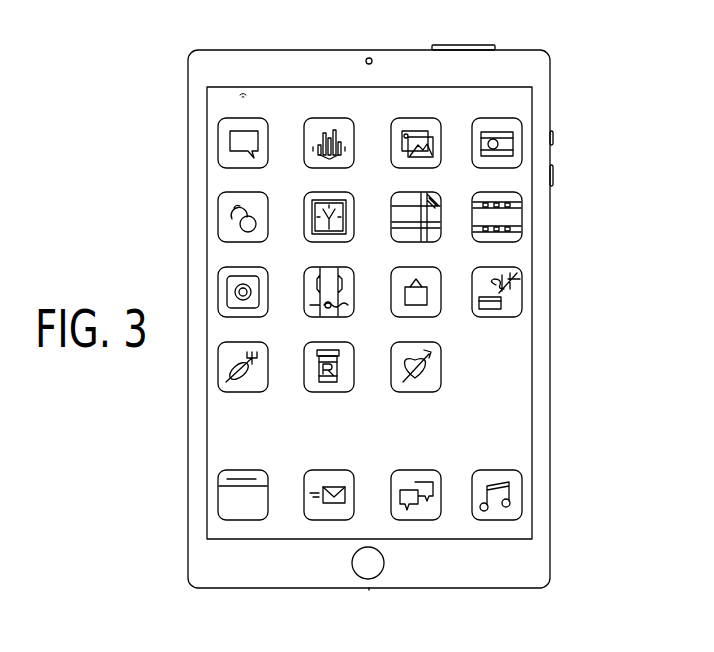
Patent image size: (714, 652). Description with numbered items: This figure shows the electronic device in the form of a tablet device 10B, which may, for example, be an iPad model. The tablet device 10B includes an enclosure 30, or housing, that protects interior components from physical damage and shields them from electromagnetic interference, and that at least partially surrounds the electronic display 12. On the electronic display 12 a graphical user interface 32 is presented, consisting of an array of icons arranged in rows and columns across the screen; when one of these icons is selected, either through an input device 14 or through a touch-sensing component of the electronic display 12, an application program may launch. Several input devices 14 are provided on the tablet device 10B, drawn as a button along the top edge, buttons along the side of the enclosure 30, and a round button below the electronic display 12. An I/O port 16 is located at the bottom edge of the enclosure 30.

The tablet device 10B is at (370, 317).
The electronic display 12 is at (532, 420).
The input devices 14 is at (462, 45).
The I/O ports 16 is at (369, 589).
The enclosure 30 is at (550, 248).
The graphical user interface 32 is at (514, 384).